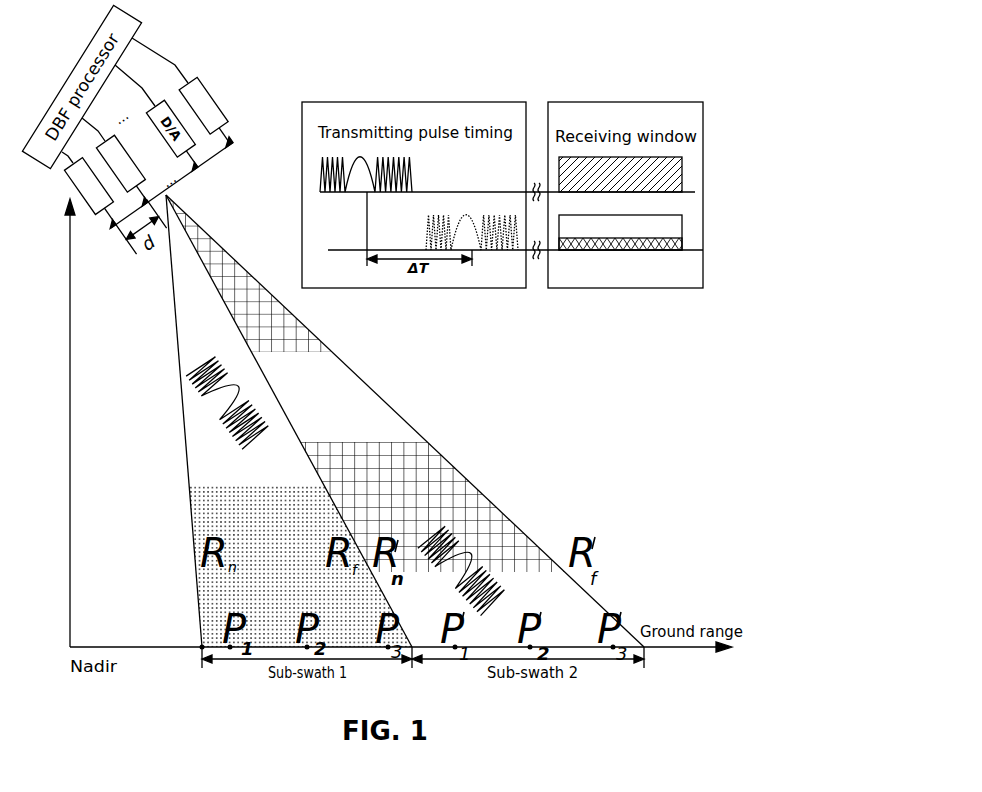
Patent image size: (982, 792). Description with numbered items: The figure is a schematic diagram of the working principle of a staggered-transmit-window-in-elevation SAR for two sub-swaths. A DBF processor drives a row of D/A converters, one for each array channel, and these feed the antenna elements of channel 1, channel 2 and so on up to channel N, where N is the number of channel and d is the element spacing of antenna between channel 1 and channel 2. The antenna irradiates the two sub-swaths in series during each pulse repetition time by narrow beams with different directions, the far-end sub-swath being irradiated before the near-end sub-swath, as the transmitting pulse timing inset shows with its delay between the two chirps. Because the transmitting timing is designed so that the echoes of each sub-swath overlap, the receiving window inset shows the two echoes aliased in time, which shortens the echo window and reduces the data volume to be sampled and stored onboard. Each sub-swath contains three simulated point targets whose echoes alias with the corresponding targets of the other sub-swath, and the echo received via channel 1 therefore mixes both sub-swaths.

The channel 1 is at (93, 195).
The channel 2 is at (124, 174).
The number of channel N is at (207, 114).